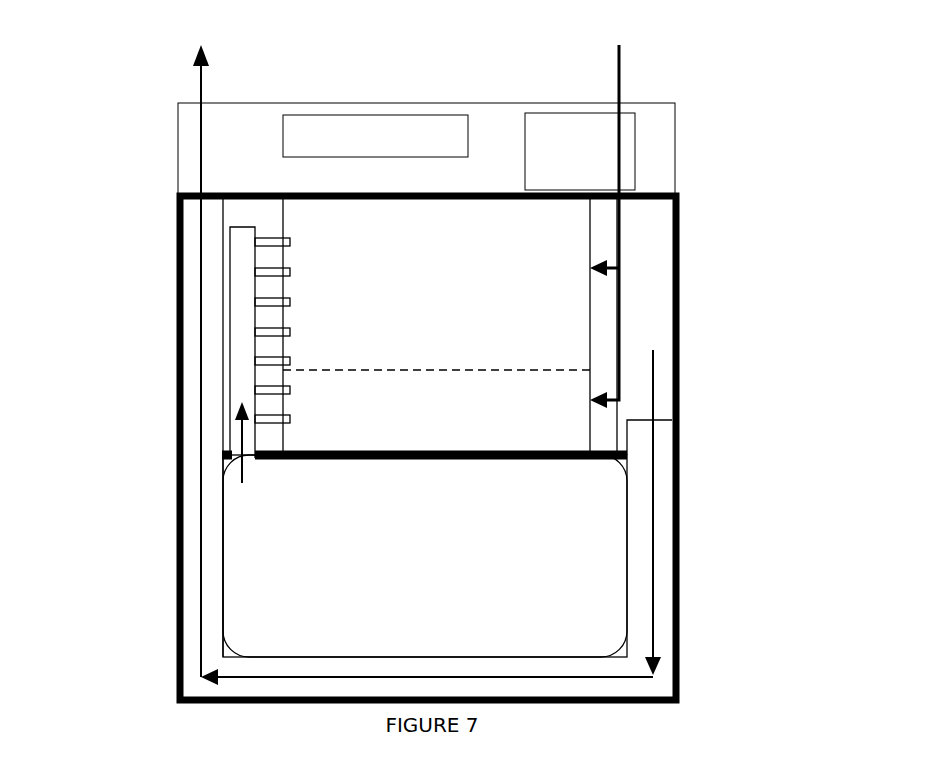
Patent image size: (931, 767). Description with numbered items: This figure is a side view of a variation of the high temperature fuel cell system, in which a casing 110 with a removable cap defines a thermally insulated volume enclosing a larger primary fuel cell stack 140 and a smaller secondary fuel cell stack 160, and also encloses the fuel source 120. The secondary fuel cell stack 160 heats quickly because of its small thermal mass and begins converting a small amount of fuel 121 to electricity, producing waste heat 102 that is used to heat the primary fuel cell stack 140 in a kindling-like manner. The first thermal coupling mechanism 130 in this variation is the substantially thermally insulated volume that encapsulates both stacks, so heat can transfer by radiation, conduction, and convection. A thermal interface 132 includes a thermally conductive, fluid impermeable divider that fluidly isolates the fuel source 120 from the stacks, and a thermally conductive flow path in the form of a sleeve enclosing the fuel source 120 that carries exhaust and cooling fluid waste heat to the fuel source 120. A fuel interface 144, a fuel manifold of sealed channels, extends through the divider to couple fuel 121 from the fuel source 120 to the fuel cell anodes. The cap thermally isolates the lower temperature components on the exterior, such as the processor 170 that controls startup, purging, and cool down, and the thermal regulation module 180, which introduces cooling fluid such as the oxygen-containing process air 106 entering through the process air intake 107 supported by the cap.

The waste heat 102 is at (658, 373).
The process air 106 is at (622, 213).
The process air intake 107 is at (622, 104).
The casing 110 is at (170, 483).
The fuel source 120 is at (425, 556).
The fuel 121 is at (233, 445).
The first thermal coupling mechanism 130 is at (658, 272).
The thermal interface 132 is at (627, 457).
The primary fuel cell stack 140 is at (436, 326).
The fuel interface 144 is at (232, 340).
The secondary fuel cell stack 160 is at (436, 402).
The processor 170 is at (375, 136).
The thermal regulation module 180 is at (580, 151).